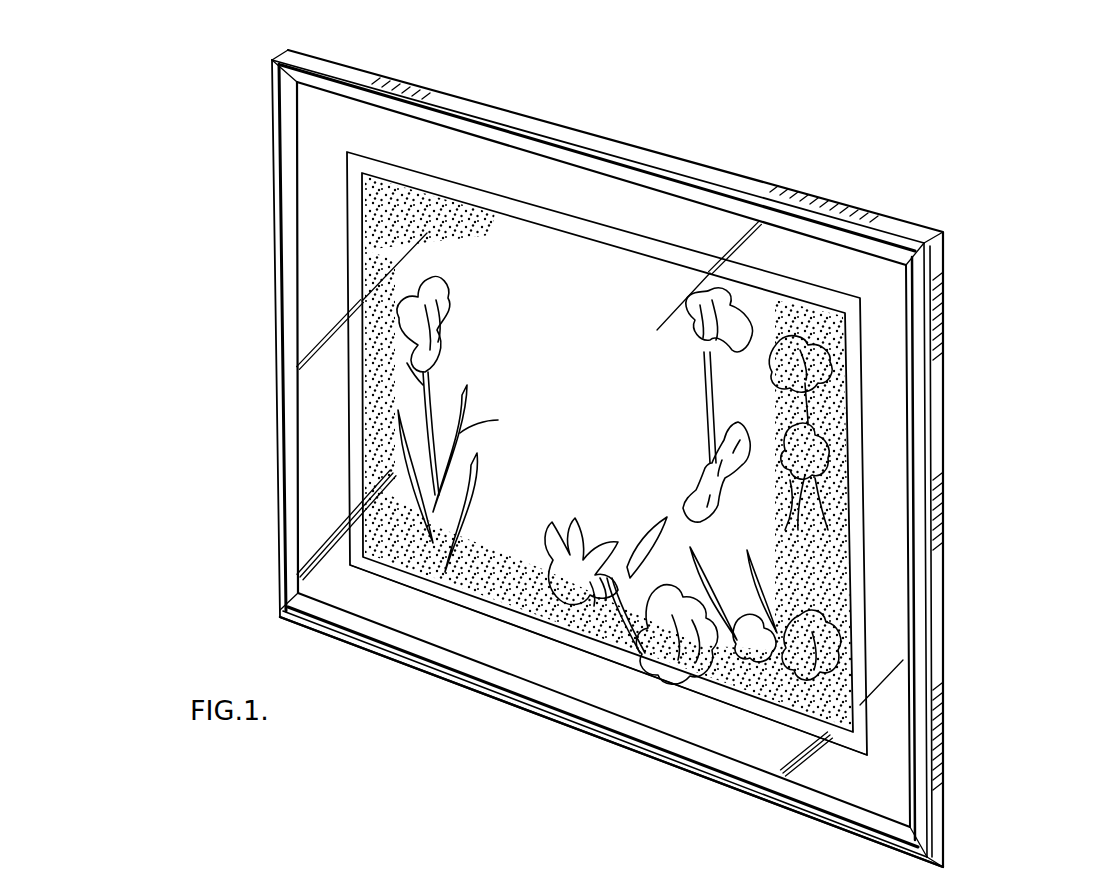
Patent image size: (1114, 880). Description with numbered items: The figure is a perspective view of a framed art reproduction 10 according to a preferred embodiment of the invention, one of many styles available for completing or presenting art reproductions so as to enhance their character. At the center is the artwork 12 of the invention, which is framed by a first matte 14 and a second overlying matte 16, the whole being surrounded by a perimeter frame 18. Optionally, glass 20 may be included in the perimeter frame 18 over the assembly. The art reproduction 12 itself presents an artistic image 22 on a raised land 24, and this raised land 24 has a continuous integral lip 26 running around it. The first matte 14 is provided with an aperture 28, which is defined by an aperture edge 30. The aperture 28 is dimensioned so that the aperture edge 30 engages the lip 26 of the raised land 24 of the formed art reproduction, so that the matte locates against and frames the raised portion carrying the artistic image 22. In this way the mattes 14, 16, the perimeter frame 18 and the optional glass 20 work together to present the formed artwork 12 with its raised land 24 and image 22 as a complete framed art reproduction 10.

The framed art reproduction 10 is at (993, 294).
The artwork 12 is at (609, 272).
The first matte 14 is at (357, 167).
The second overlying matte 16 is at (332, 137).
The perimeter frame 18 is at (290, 408).
The glass 20 is at (795, 750).
The artistic image 22 is at (466, 432).
The raised land 24 is at (646, 426).
The continuous integral lip 26 is at (491, 205).
The aperture 28 is at (510, 630).
The aperture edge 30 is at (644, 259).